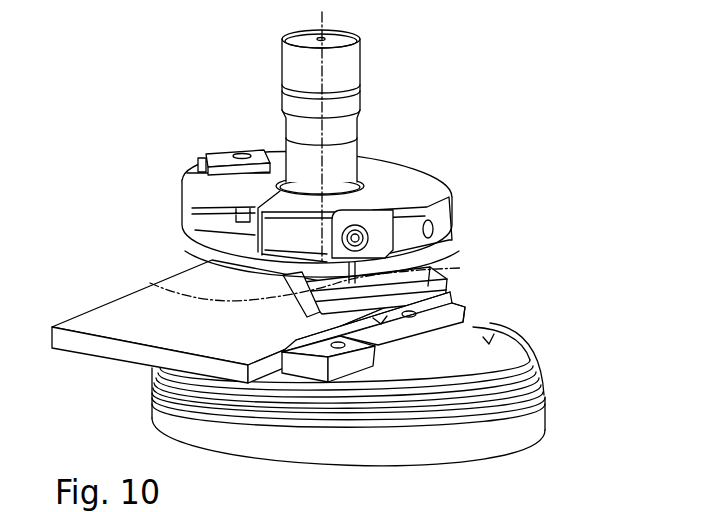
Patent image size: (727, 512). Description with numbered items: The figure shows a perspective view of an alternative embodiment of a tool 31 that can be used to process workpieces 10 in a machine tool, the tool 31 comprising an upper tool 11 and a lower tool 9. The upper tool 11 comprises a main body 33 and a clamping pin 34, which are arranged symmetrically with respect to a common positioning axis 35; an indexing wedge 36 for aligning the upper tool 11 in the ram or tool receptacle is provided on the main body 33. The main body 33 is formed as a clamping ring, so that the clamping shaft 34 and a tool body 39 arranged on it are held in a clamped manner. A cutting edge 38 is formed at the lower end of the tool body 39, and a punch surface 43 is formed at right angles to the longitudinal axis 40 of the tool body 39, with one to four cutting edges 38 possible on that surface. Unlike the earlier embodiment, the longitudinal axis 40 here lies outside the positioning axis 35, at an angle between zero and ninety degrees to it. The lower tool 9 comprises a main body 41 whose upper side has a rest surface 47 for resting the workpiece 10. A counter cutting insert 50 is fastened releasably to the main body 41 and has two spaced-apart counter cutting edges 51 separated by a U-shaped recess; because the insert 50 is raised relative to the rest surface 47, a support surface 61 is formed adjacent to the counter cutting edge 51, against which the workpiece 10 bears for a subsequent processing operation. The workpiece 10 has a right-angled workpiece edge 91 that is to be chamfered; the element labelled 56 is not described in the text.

The lower tool 9 is at (540, 355).
The workpiece 10 is at (93, 318).
The upper tool 11 is at (203, 109).
The tool 31 is at (412, 118).
The main body 33 is at (425, 167).
The clamping pin 34 is at (346, 66).
The positioning axis 35 is at (317, 20).
The indexing wedge 36 is at (218, 156).
The cutting edge 38 is at (422, 290).
The tool body 39 is at (215, 263).
The longitudinal axis 40 is at (152, 284).
The main body 41 is at (506, 428).
The punch surface 43 is at (374, 259).
The rest surface 47 is at (488, 340).
The counter cutting insert 50 is at (369, 363).
The counter cutting edge 51 is at (362, 319).
The guide surface 56 is at (442, 304).
The support surface 61 is at (270, 368).
The workpiece edge 91 is at (445, 300).